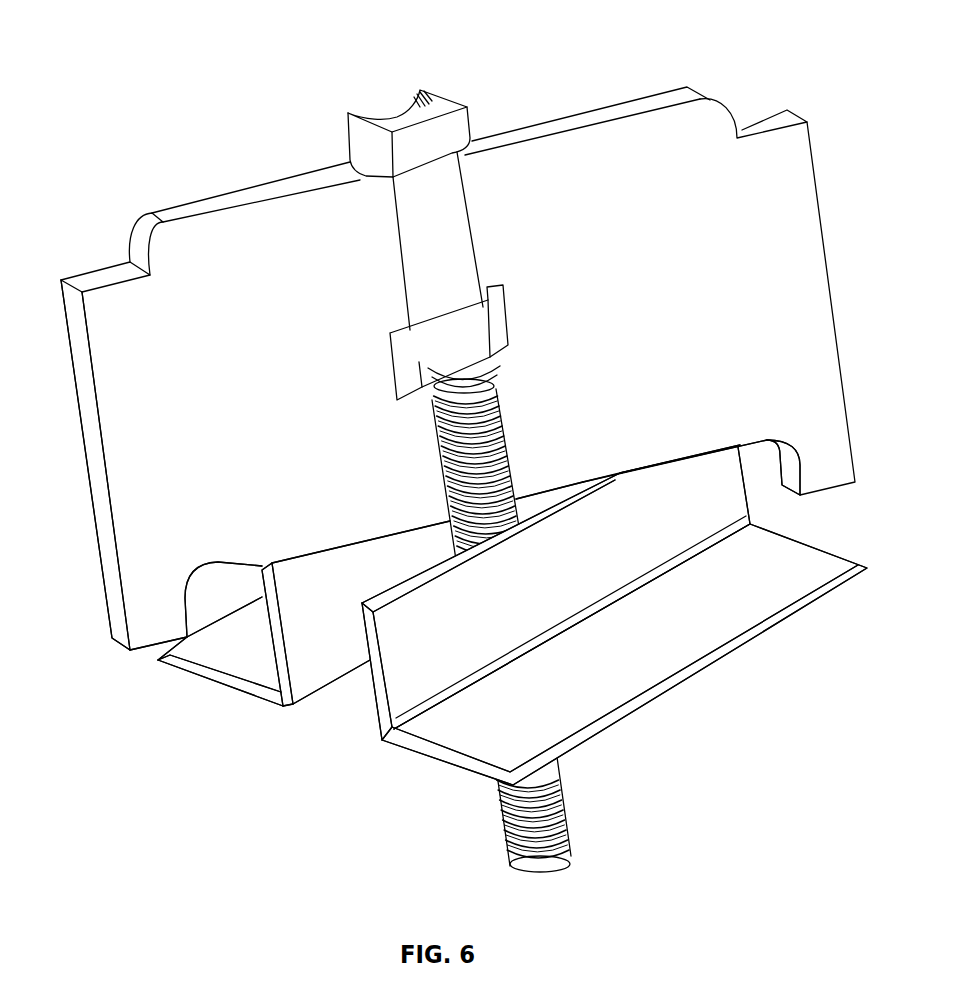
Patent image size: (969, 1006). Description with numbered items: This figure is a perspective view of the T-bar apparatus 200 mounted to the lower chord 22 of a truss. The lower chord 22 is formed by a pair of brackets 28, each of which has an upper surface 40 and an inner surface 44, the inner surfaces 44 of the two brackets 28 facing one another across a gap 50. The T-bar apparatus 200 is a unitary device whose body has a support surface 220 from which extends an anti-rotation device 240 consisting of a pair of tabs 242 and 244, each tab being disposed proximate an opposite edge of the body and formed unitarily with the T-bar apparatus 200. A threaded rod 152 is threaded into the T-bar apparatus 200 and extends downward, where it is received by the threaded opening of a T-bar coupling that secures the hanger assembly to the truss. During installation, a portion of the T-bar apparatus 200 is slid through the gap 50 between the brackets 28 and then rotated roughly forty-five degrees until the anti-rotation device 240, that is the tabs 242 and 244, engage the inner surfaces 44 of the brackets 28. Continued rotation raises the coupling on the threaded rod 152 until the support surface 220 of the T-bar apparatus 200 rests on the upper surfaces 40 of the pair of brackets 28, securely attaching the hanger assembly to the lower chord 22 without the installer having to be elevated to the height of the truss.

The lower chord 22 is at (262, 746).
The brackets 28 is at (203, 673).
The upper surface 40 is at (297, 554).
The inner surface 44 is at (537, 609).
The gap 50 is at (345, 716).
The threaded rod 152 is at (563, 808).
The T-bar apparatus 200 is at (458, 372).
The support surface 220 is at (660, 466).
The anti-rotation device 240 is at (101, 632).
The tab 242 is at (145, 625).
The tab 244 is at (815, 486).